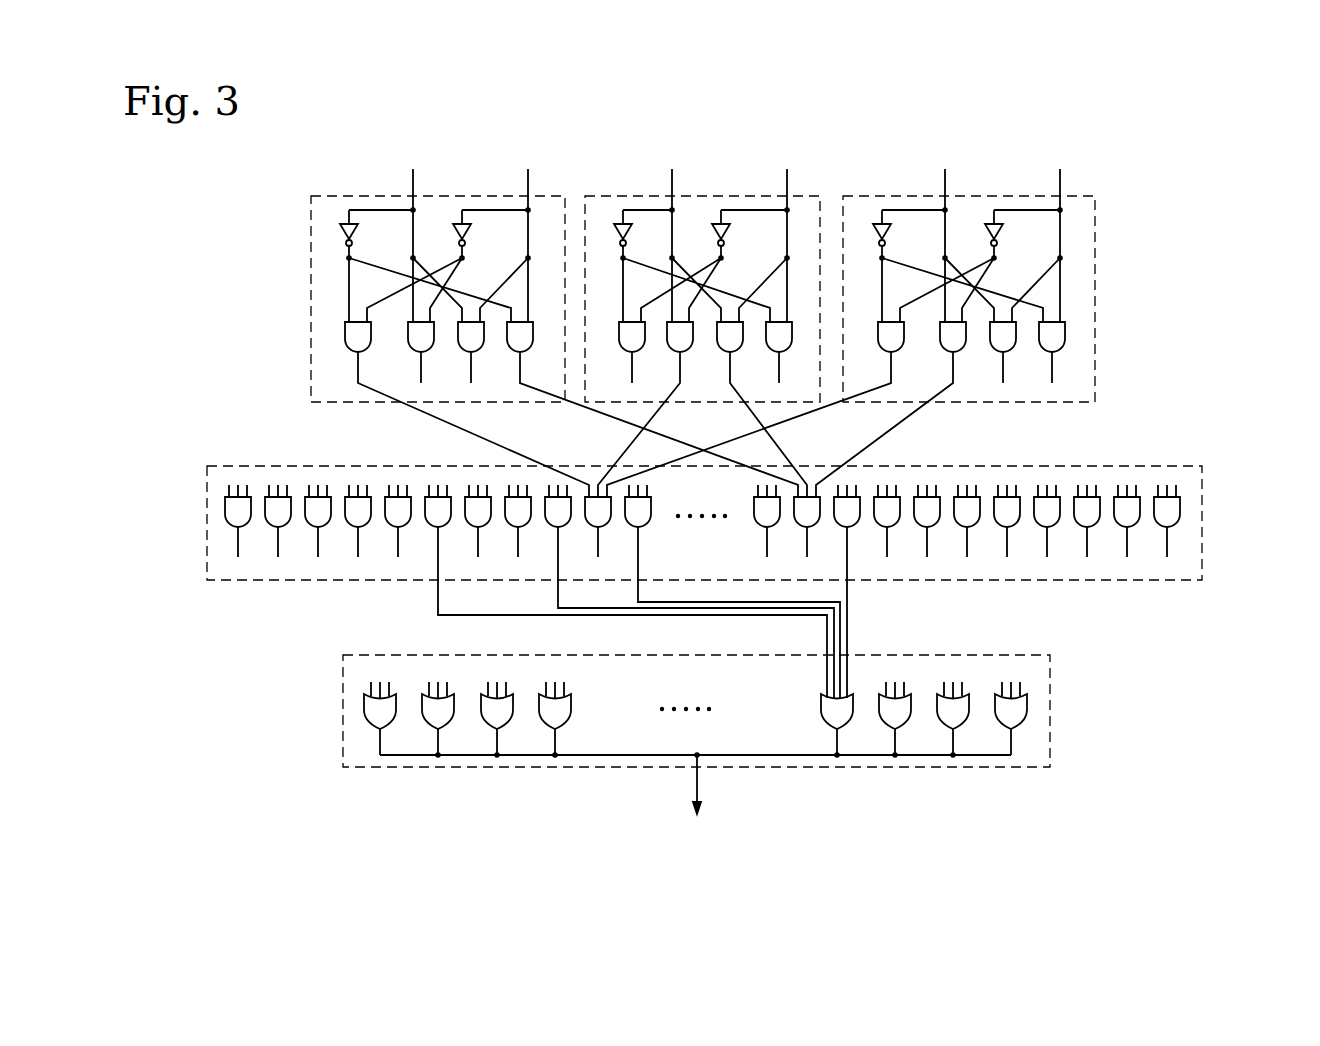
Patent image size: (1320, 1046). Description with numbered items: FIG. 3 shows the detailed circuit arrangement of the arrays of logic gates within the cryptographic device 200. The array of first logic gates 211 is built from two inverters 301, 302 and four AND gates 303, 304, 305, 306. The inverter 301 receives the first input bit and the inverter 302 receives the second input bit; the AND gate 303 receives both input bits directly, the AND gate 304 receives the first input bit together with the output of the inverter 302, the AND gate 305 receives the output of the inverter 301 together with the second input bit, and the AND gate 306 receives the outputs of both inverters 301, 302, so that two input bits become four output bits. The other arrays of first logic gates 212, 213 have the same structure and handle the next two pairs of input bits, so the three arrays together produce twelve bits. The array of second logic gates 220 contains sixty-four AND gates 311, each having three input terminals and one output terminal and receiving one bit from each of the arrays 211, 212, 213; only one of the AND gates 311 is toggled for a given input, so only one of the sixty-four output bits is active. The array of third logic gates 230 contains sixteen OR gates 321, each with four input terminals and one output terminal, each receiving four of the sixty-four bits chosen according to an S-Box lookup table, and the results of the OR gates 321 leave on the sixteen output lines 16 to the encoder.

The cryptographic device 200 is at (1254, 140).
The array of first logic gates 211 is at (883, 196).
The array of first logic gates 212 is at (624, 196).
The array of first logic gates 213 is at (352, 196).
The array of second logic gates 220 is at (1202, 518).
The array of third logic gates 230 is at (1050, 716).
The inverter 301 is at (997, 230).
The inverter 302 is at (885, 230).
The AND gate 303 is at (1064, 350).
The AND gate 304 is at (1015, 350).
The AND gate 305 is at (965, 350).
The AND gate 306 is at (903, 350).
The AND gate 311 is at (1180, 510).
The OR gate 321 is at (1027, 700).
The 16-bit output lines to encoder 16 is at (691, 793).